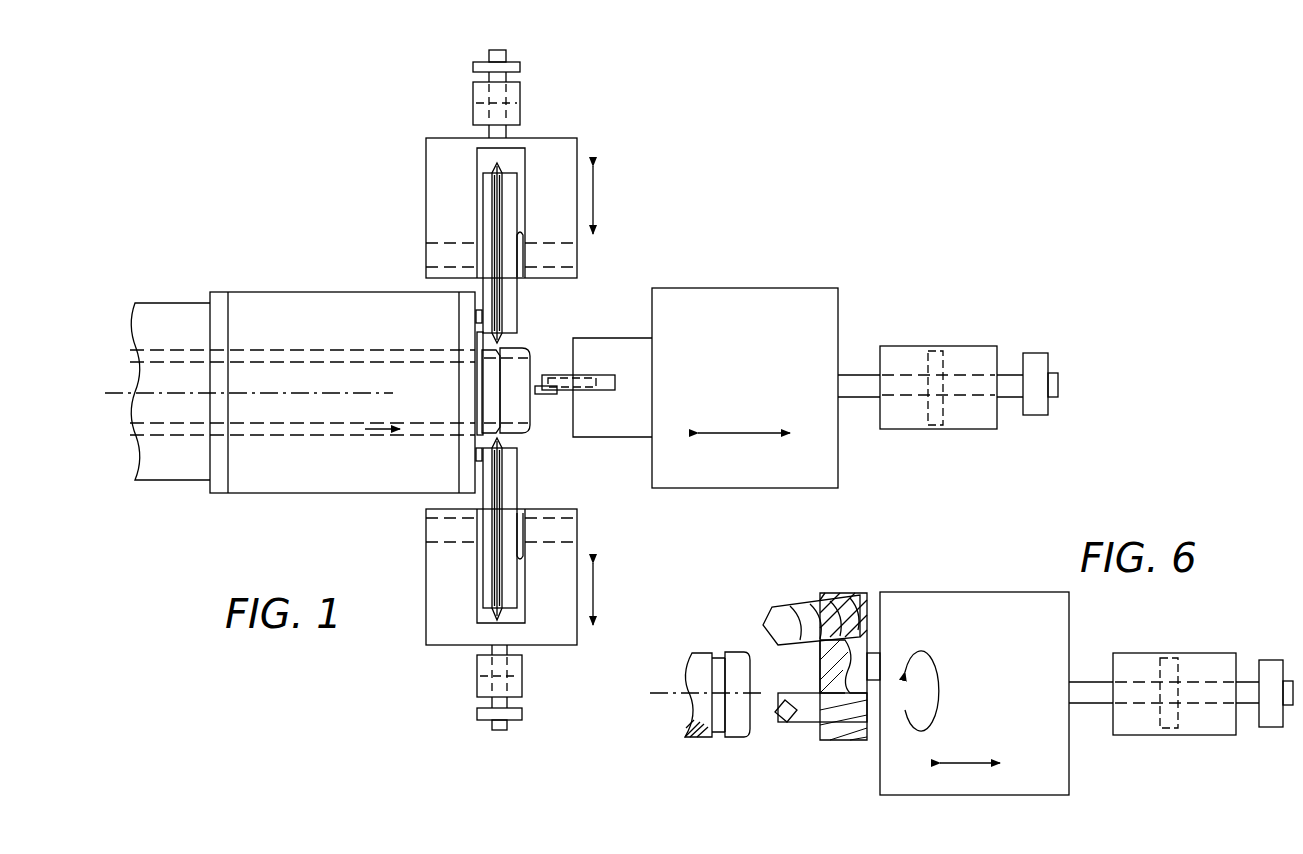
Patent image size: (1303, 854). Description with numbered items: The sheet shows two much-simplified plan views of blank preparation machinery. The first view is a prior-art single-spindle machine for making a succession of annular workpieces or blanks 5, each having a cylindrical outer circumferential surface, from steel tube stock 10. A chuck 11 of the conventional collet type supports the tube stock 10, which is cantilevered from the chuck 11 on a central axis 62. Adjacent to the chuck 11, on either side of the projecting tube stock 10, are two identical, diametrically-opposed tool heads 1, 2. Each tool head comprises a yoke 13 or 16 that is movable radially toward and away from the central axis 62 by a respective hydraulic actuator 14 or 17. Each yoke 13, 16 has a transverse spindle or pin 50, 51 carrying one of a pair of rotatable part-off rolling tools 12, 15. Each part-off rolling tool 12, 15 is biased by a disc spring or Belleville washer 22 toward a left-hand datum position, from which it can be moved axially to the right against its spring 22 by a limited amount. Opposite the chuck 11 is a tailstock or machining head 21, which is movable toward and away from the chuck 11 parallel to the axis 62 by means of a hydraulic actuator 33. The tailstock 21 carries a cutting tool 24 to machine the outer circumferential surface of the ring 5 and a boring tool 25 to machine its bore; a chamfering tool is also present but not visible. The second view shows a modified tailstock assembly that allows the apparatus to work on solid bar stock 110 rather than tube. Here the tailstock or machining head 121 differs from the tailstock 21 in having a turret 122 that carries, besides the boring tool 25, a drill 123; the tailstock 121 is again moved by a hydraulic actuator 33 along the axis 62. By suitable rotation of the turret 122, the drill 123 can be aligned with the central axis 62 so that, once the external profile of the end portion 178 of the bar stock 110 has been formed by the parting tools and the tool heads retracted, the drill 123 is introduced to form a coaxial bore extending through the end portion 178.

In FIG. 1, the tool head 1 is at (413, 183).
In FIG. 1, the tool head 2 is at (420, 530).
In FIG. 1, the annular workpiece or blank 5 is at (523, 367).
In FIG. 1, the tube stock 10 is at (328, 348).
In FIG. 1, the chuck 11 is at (252, 307).
In FIG. 1, the part-off rolling tool 12 is at (490, 210).
In FIG. 1, the yoke 13 is at (426, 157).
In FIG. 1, the hydraulic actuator 14 is at (473, 108).
In FIG. 1, the part-off rolling tool 15 is at (492, 592).
In FIG. 1, the yoke 16 is at (426, 570).
In FIG. 1, the hydraulic actuator 17 is at (477, 678).
In FIG. 1, the tailstock or machining head 21 is at (718, 308).
In FIG. 1, the disc spring or Belleville washer 22 is at (521, 238).
In FIG. 1, the cutting tool 24 is at (543, 395).
In FIG. 1, the boring tool 25 is at (578, 378).
In FIG. 6, the boring tool 25 is at (788, 722).
In FIG. 1, the hydraulic actuator 33 is at (958, 353).
In FIG. 6, the hydraulic actuator 33 is at (997, 665).
In FIG. 1, the transverse spindle or pin 50 is at (560, 255).
In FIG. 1, the transverse spindle or pin 51 is at (567, 525).
In FIG. 1, the central axis 62 is at (157, 392).
In FIG. 6, the central axis 62 is at (662, 690).
In FIG. 6, the bar stock 110 is at (705, 653).
In FIG. 6, the tailstock or machining head 121 is at (920, 613).
In FIG. 6, the turret 122 is at (847, 593).
In FIG. 6, the drill 123 is at (783, 610).
In FIG. 6, the end portion 178 is at (737, 725).